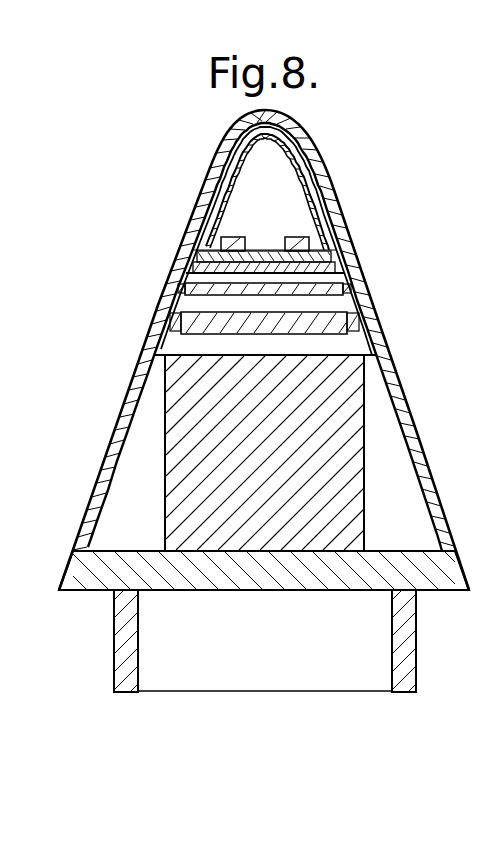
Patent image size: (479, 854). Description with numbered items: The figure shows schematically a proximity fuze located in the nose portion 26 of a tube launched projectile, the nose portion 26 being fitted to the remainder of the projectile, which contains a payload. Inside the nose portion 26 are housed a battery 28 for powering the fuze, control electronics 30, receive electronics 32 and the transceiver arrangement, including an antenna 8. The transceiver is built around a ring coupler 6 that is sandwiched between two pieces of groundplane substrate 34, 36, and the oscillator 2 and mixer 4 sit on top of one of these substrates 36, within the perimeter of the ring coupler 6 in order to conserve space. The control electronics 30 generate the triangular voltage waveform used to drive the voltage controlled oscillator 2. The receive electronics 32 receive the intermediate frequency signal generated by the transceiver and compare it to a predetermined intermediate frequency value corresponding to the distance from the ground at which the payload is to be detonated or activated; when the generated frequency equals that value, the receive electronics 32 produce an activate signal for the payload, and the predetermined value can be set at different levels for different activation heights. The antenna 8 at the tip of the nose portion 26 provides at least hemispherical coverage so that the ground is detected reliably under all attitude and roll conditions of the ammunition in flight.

The oscillator 2 is at (234, 239).
The mixer 4 is at (298, 239).
The ring coupler 6 is at (195, 256).
The antenna 8 is at (297, 147).
The nose portion 26 is at (117, 426).
The battery 28 is at (350, 426).
The control electronics 30 is at (360, 322).
The receive electronics 32 is at (352, 288).
The groundplane substrate 34 is at (192, 268).
The groundplane substrate 36 is at (193, 248).